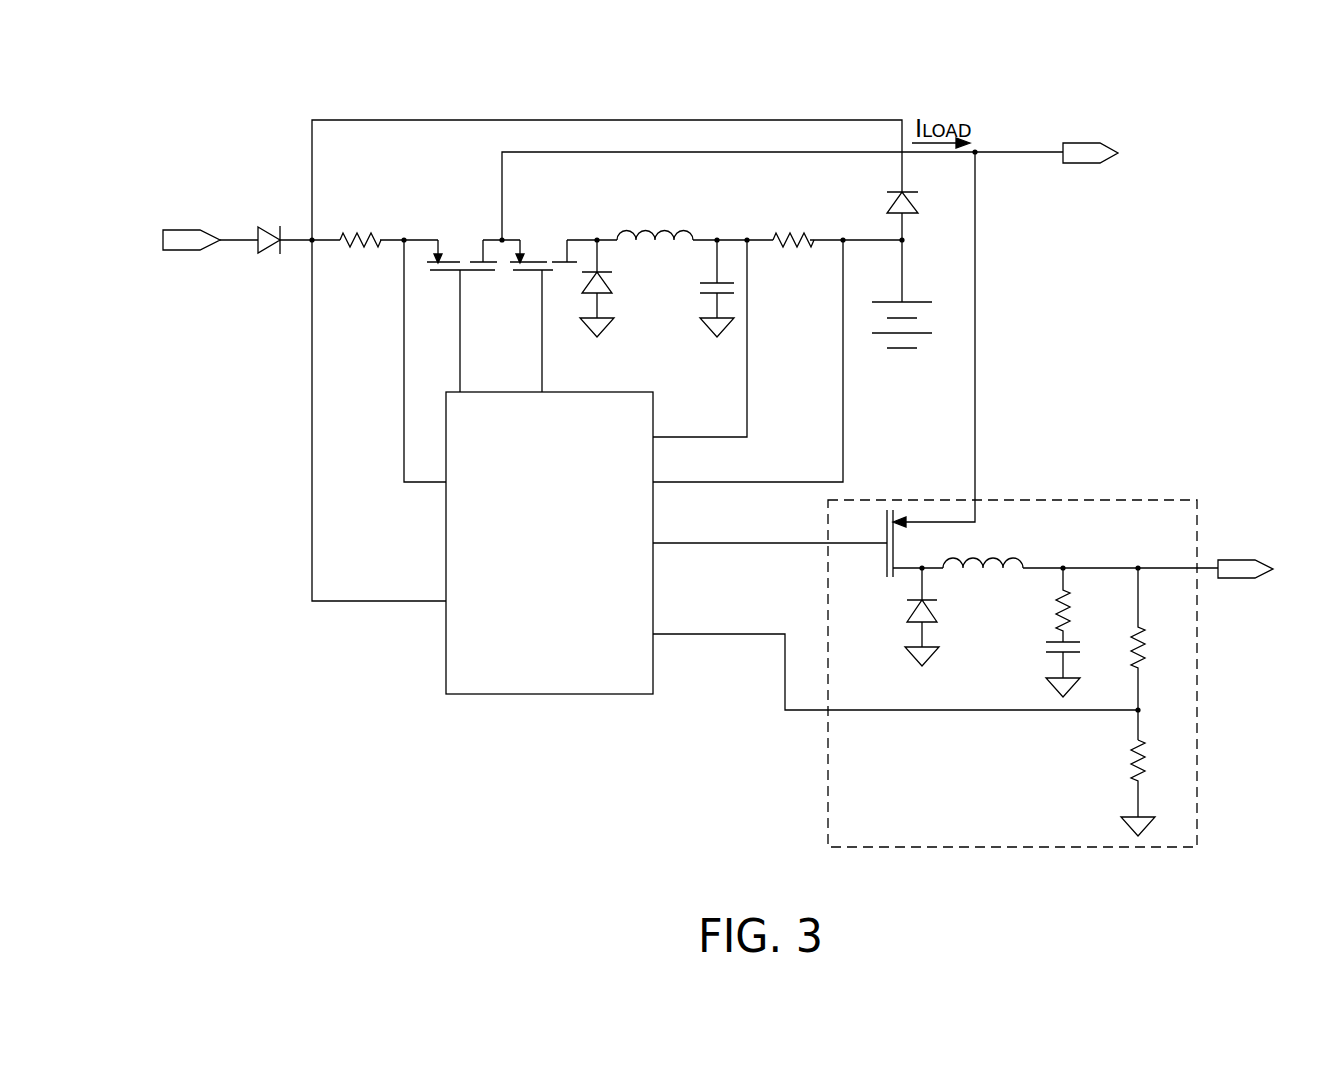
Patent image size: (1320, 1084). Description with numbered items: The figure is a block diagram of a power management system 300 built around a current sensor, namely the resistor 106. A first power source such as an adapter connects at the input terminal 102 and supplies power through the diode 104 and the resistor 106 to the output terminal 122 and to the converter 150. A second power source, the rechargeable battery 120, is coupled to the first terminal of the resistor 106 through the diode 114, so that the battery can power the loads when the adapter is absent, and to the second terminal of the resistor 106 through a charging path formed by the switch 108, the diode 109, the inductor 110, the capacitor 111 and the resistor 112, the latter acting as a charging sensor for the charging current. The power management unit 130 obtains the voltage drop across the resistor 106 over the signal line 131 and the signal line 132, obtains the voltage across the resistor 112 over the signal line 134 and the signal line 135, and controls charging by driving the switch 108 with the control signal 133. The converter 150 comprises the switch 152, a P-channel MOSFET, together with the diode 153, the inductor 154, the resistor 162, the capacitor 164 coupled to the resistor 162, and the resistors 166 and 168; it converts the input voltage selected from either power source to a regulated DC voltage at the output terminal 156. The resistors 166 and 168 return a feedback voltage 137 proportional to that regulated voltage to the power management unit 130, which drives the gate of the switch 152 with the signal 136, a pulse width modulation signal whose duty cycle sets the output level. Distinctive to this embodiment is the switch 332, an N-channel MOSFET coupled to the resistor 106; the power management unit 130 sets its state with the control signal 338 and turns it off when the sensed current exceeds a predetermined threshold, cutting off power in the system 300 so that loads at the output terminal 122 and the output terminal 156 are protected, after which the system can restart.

The power management system 300 is at (240, 145).
The input terminal 102 is at (200, 251).
The diode 104 is at (272, 251).
The current sensor 106 is at (375, 232).
The switch 332 is at (447, 273).
The switch 108 is at (540, 273).
The diode 109 is at (605, 286).
The inductor 110 is at (668, 230).
The capacitor 111 is at (715, 283).
The resistor 112 is at (792, 232).
The diode 114 is at (895, 190).
The rechargeable battery 120 is at (908, 300).
The output terminal 122 is at (1088, 140).
The power management unit 130 is at (548, 696).
The signal line 131 is at (421, 603).
The signal line 132 is at (405, 353).
The control signal 338 is at (461, 373).
The control signal 133 is at (542, 380).
The signal line 134 is at (680, 437).
The signal line 135 is at (680, 482).
The signal 136 is at (680, 543).
The feedback voltage 137 is at (680, 634).
The converter 150 is at (1012, 499).
The switch 152 is at (885, 560).
The diode 153 is at (937, 612).
The inductor 154 is at (983, 545).
The output terminal 156 is at (1232, 580).
The resistor 162 is at (1055, 612).
The capacitor 164 is at (1048, 650).
The resistor 166 is at (1147, 643).
The resistor 168 is at (1147, 760).